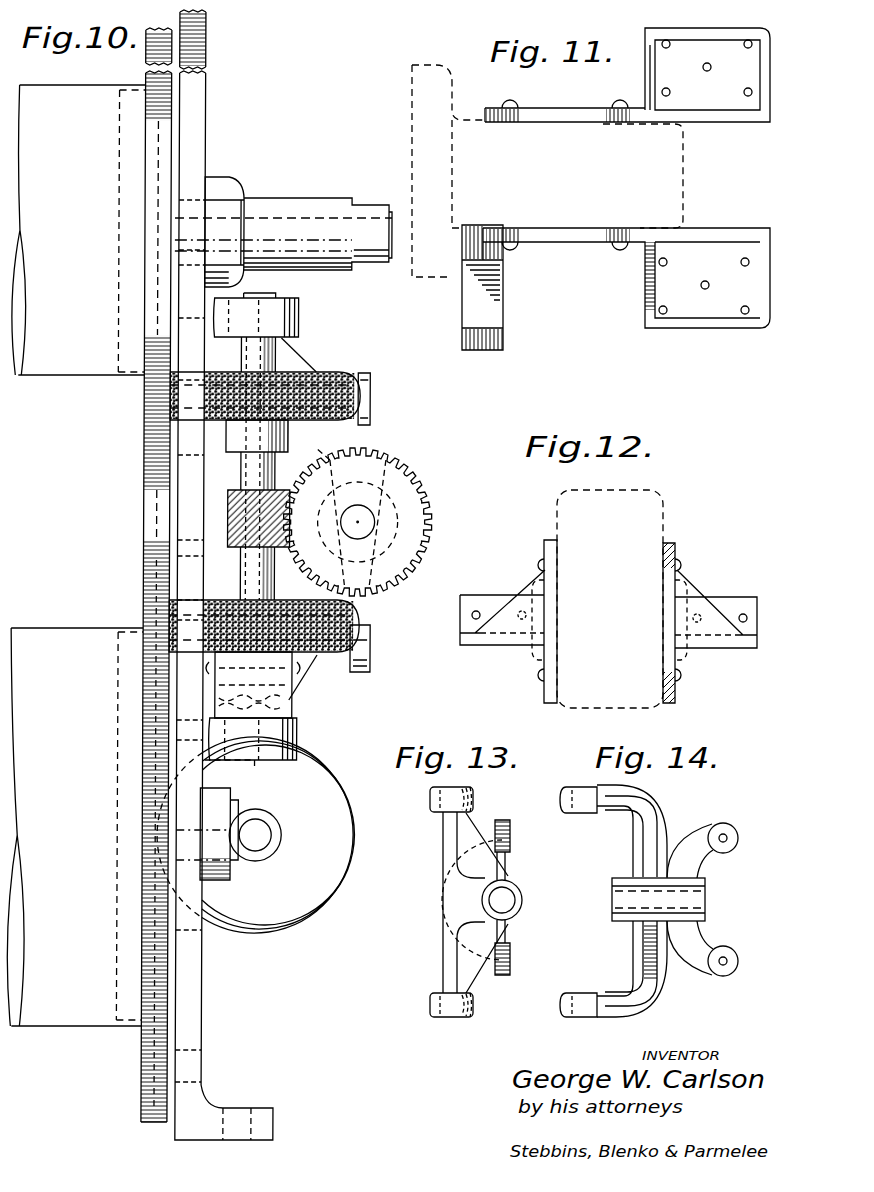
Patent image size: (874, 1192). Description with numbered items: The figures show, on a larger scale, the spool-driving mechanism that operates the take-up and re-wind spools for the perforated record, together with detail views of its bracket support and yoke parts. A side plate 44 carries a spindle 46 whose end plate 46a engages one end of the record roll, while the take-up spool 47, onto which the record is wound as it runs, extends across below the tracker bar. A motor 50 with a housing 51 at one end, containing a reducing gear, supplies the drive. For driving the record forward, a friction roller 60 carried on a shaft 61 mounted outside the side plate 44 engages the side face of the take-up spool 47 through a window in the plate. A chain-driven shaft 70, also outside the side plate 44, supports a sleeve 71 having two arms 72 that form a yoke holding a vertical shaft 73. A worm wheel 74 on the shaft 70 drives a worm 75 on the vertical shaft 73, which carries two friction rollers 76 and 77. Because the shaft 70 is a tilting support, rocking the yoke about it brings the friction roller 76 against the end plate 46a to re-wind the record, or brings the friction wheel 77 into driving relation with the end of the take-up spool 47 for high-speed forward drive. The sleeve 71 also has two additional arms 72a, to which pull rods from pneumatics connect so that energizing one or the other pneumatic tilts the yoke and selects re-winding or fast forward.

In FIG. 10, the side plate 44 is at (201, 118).
In FIG. 10, the spindle 46 is at (296, 214).
In FIG. 10, the end plate 46a is at (146, 436).
In FIG. 10, the take-up spool 47 is at (143, 630).
In FIG. 11, the motor 50 is at (452, 198).
In FIG. 11, the housing 51 is at (688, 168).
In FIG. 12, the housing 51 is at (656, 498).
In FIG. 10, the friction roller 60 is at (267, 932).
In FIG. 10, the shaft 61 is at (286, 836).
In FIG. 10, the shaft 70 is at (358, 538).
In FIG. 13, the sleeve 71 is at (522, 898).
In FIG. 14, the sleeve 71 is at (620, 900).
In FIG. 10, the arms 72 is at (290, 346).
In FIG. 13, the arms 72 is at (452, 820).
In FIG. 14, the arms 72 is at (652, 812).
In FIG. 10, the additional arms 72a is at (372, 381).
In FIG. 13, the additional arms 72a is at (513, 963).
In FIG. 14, the additional arms 72a is at (728, 826).
In FIG. 10, the vertical shaft 73 is at (252, 472).
In FIG. 10, the worm wheel 74 is at (432, 523).
In FIG. 10, the worm 75 is at (230, 516).
In FIG. 10, the friction roller 76 is at (336, 376).
In FIG. 10, the friction wheel 77 is at (330, 654).